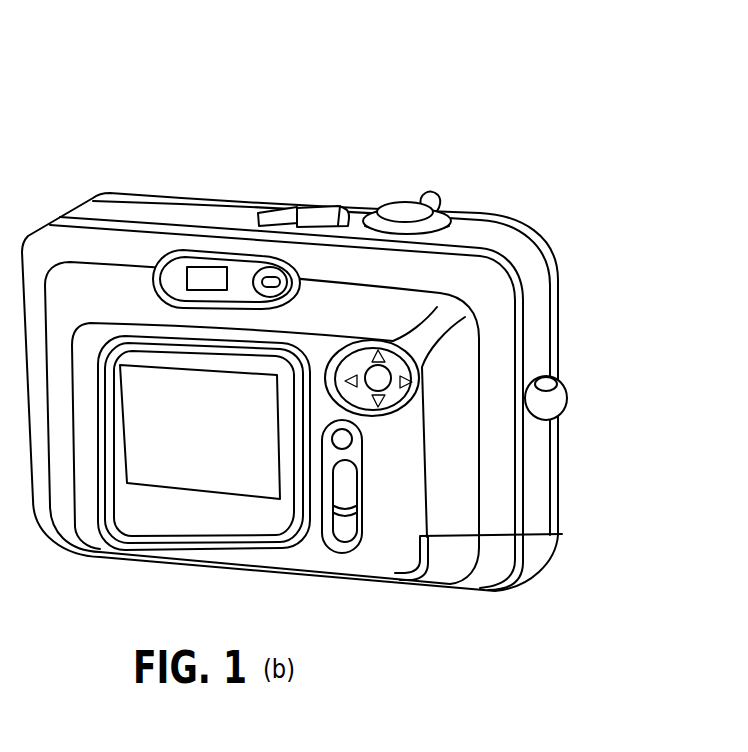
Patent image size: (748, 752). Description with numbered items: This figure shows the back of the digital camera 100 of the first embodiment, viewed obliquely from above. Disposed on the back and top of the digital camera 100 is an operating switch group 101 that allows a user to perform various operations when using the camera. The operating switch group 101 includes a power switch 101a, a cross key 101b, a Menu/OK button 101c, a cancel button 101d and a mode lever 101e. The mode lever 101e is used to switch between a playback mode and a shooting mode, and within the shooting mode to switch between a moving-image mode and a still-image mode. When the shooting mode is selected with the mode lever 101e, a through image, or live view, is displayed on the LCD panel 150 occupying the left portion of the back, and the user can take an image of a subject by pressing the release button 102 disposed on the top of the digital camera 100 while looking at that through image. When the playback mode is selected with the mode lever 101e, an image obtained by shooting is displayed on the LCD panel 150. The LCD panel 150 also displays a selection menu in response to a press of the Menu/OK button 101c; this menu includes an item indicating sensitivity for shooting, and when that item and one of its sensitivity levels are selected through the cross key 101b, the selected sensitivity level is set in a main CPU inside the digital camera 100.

The digital camera 100 is at (292, 72).
The operating switch group 101 is at (653, 535).
The power switch 101a is at (318, 207).
The cross key 101b is at (400, 399).
The Menu/OK button 101c is at (343, 469).
The cancel button 101d is at (343, 543).
The mode lever 101e is at (437, 200).
The release button 102 is at (397, 200).
The LCD panel 150 is at (172, 460).